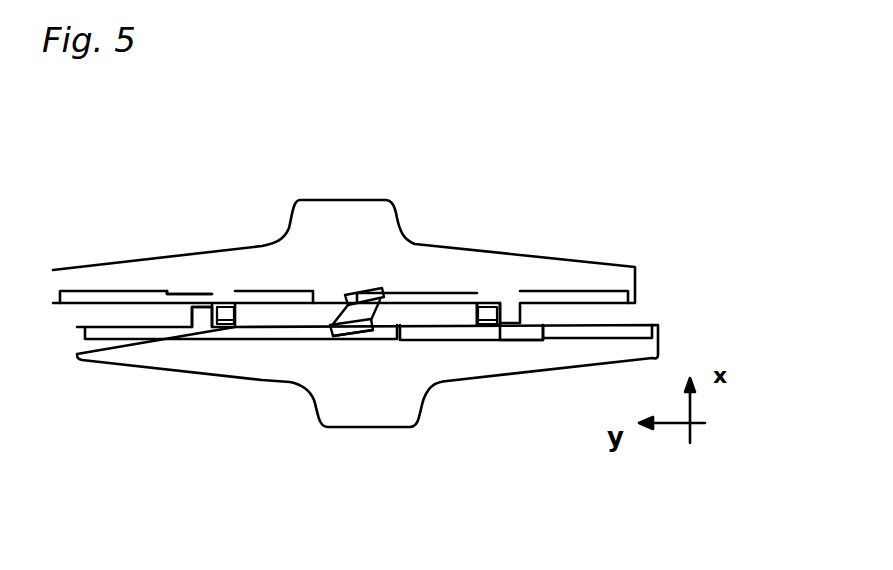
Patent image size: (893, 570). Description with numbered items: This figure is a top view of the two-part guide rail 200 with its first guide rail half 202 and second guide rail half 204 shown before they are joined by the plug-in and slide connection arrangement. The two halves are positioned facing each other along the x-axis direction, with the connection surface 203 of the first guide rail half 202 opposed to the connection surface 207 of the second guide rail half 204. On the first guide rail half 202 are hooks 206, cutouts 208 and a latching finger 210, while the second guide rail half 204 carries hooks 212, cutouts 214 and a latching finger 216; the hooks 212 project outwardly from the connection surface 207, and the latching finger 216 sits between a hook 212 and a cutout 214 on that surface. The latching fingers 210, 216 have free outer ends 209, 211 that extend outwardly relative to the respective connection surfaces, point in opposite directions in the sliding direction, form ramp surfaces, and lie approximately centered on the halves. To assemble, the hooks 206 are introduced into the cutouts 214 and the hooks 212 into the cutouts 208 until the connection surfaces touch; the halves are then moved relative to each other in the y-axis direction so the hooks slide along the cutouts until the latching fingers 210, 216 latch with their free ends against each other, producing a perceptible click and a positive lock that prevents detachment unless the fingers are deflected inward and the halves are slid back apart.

The two-part guide rail 200 is at (260, 392).
The first guide rail half 202 is at (359, 210).
The connection surface 203 is at (610, 309).
The second guide rail half 204 is at (357, 418).
The hooks 206 is at (230, 313).
The connection surface 207 is at (647, 326).
The cutouts 208 is at (188, 297).
The free outer end 209 is at (332, 330).
The latching finger 210 is at (352, 299).
The free outer end 211 is at (372, 322).
The hooks 212 is at (200, 318).
The cutouts 214 is at (517, 338).
The latching finger 216 is at (360, 330).